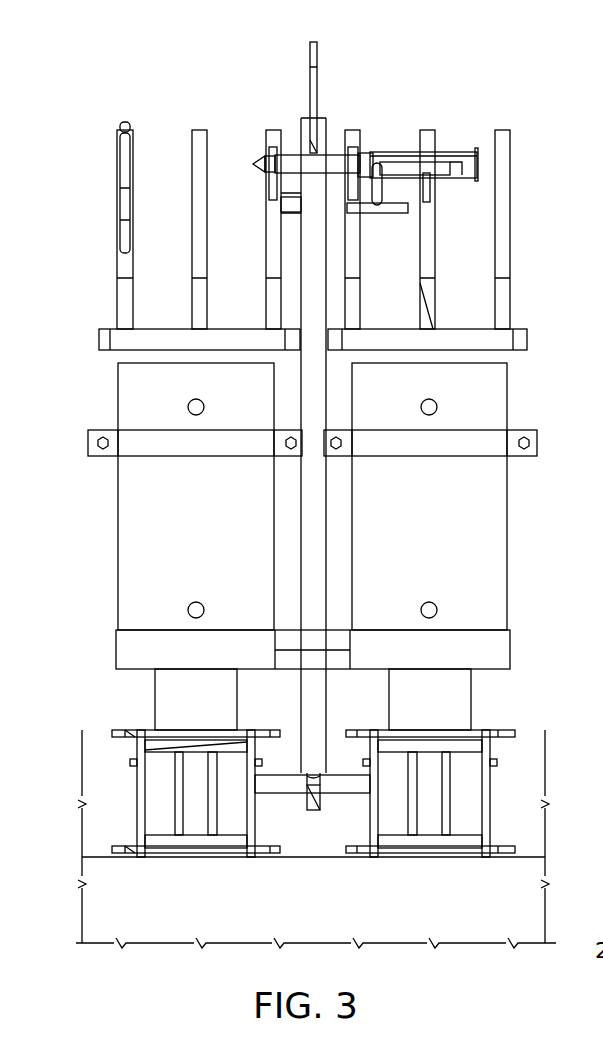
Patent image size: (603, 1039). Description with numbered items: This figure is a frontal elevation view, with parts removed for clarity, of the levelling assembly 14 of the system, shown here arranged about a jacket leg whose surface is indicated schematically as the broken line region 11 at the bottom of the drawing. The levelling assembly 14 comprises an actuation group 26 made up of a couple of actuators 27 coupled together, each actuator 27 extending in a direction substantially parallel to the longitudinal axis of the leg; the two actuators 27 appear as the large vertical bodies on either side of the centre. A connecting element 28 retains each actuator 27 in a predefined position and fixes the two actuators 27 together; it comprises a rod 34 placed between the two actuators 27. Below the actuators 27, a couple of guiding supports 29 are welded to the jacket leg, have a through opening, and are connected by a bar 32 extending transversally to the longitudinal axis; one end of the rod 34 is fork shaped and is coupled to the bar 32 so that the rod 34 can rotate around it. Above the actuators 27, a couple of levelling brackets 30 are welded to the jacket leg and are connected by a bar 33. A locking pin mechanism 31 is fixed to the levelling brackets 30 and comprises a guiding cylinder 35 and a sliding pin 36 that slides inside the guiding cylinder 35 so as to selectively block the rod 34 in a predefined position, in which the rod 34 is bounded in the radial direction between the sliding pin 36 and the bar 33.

The ground surface 11 is at (168, 913).
The levelling assembly 14 is at (114, 86).
The actuation group 26 is at (541, 598).
The actuator 27 is at (138, 500).
The connecting element 28 is at (288, 575).
The guiding support 29 is at (214, 872).
The levelling bracket 30 is at (95, 268).
The locking pin mechanism 31 is at (376, 108).
The bar 32 is at (277, 785).
The bar 33 is at (292, 200).
The rod 34 is at (315, 543).
The guiding cylinder 35 is at (412, 167).
The sliding pin 36 is at (335, 160).